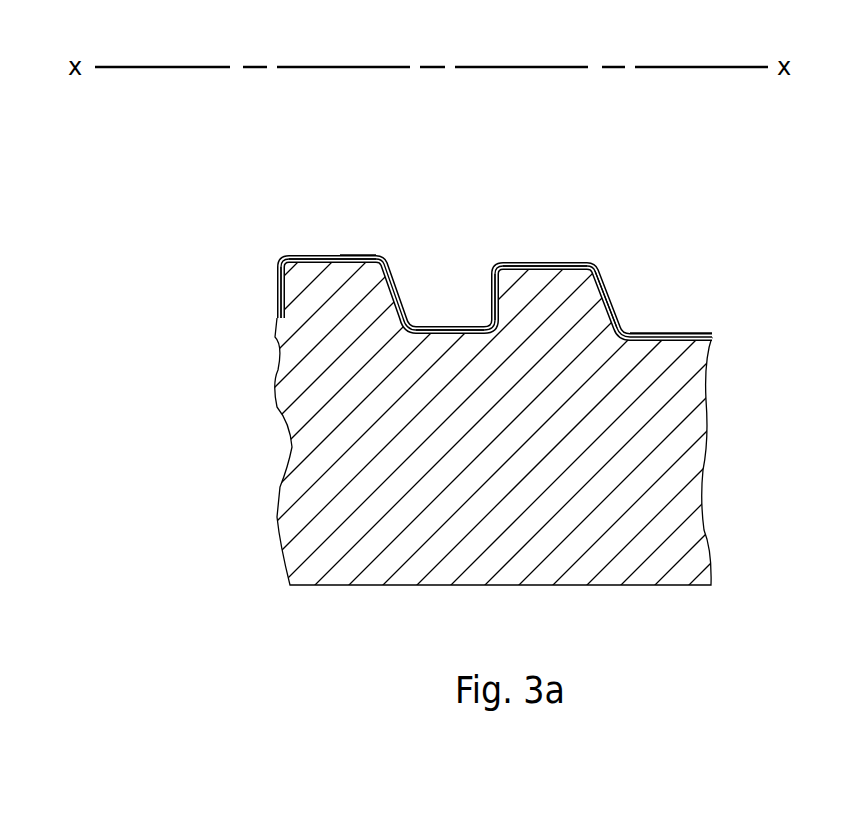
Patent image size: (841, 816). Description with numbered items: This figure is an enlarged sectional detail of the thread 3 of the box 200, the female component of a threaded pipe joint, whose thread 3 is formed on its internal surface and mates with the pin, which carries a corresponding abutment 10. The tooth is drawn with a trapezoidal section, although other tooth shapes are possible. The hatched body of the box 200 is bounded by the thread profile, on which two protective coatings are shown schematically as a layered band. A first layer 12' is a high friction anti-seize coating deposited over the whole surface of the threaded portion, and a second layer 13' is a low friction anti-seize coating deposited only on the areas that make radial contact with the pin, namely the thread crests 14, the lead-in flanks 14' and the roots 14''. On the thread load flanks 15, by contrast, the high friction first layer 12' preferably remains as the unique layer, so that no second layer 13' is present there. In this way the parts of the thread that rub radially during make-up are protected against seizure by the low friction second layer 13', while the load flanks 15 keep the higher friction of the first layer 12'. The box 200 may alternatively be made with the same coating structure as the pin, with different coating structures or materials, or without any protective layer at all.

The thread 3 is at (328, 292).
The abutment 10 is at (560, 383).
The first layer 12' is at (210, 241).
The second layer 13' is at (588, 212).
The thread crest 14 is at (564, 190).
The lead-in flank 14' is at (689, 244).
The root 14'' is at (323, 351).
The thread load flank 15 is at (491, 299).
The box 200 is at (345, 466).